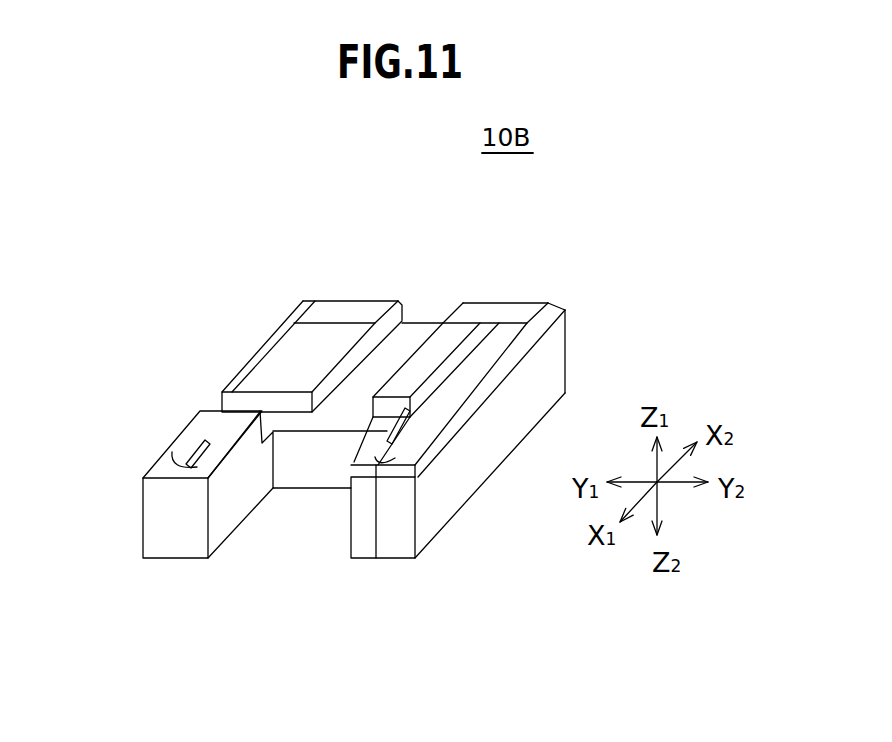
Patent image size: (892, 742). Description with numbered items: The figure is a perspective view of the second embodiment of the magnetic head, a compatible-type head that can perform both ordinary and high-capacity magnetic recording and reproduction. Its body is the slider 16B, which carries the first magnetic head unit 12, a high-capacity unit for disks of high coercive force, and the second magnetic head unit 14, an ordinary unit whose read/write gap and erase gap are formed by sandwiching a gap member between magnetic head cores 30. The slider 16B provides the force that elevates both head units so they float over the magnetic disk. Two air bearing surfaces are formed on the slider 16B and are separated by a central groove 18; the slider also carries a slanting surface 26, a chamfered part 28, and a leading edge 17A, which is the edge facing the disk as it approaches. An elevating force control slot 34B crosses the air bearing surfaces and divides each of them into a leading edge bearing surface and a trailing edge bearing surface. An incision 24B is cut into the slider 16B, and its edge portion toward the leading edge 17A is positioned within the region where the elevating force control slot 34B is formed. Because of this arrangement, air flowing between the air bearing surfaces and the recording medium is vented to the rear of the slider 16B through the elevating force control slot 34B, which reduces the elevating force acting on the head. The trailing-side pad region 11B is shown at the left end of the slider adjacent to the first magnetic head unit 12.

The trailing side pad 11B is at (163, 482).
The first magnetic head unit 12 is at (190, 446).
The second magnetic head unit 14 is at (419, 432).
The slider 16B is at (463, 525).
The leading edge 17A is at (380, 304).
The central groove 18 is at (422, 335).
The incision 24B is at (268, 527).
The slanting surface 26 is at (357, 306).
The chamfered part 28 is at (242, 374).
The magnetic head core 30 is at (363, 540).
The elevating force control slot 34B is at (392, 431).